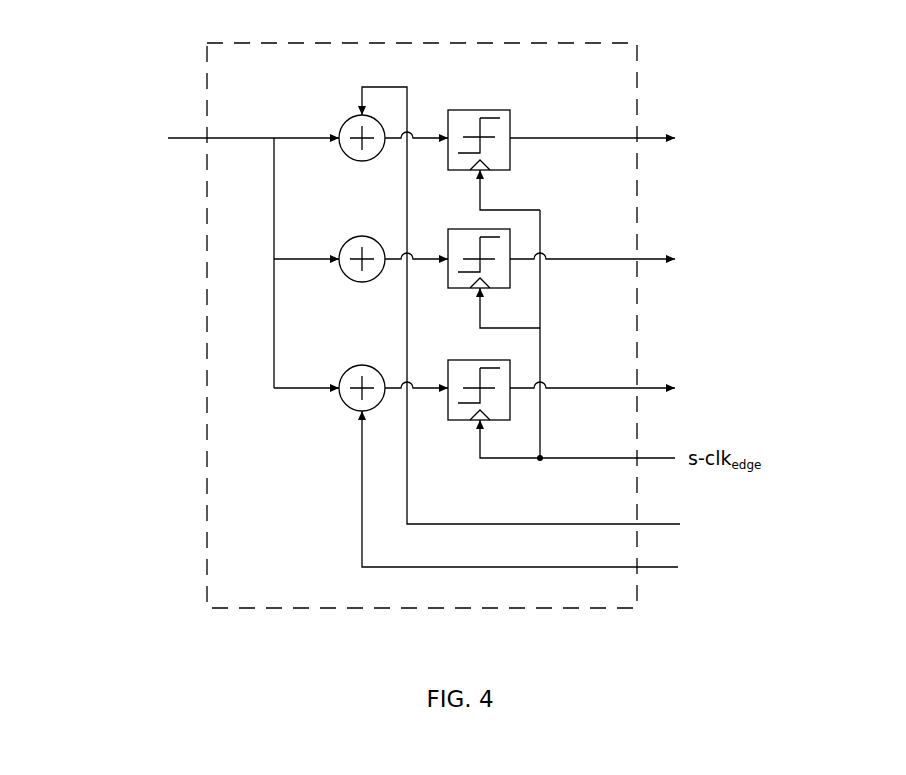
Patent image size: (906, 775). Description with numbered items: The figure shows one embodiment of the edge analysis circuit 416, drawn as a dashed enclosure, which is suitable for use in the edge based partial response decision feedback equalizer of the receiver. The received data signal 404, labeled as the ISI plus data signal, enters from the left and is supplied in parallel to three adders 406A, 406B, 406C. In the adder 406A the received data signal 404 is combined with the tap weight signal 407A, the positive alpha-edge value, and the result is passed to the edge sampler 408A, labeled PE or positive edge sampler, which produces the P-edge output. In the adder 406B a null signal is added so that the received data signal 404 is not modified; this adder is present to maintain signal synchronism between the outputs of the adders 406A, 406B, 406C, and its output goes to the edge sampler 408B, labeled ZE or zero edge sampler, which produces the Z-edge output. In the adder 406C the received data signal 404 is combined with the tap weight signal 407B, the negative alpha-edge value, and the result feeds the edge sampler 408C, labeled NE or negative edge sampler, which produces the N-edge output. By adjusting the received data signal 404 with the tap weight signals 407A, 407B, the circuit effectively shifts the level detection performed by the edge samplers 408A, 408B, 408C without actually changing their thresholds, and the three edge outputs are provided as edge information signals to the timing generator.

The received data signal 404 is at (131, 178).
The adder 406A is at (343, 117).
The adder 406B is at (358, 237).
The adder 406C is at (345, 407).
The tap weight signal 407A is at (395, 87).
The tap weight signal 407B is at (360, 472).
The edge sampler 408A is at (498, 108).
The edge sampler 408B is at (500, 228).
The edge sampler 408C is at (500, 360).
The edge analysis circuit 416 is at (562, 43).